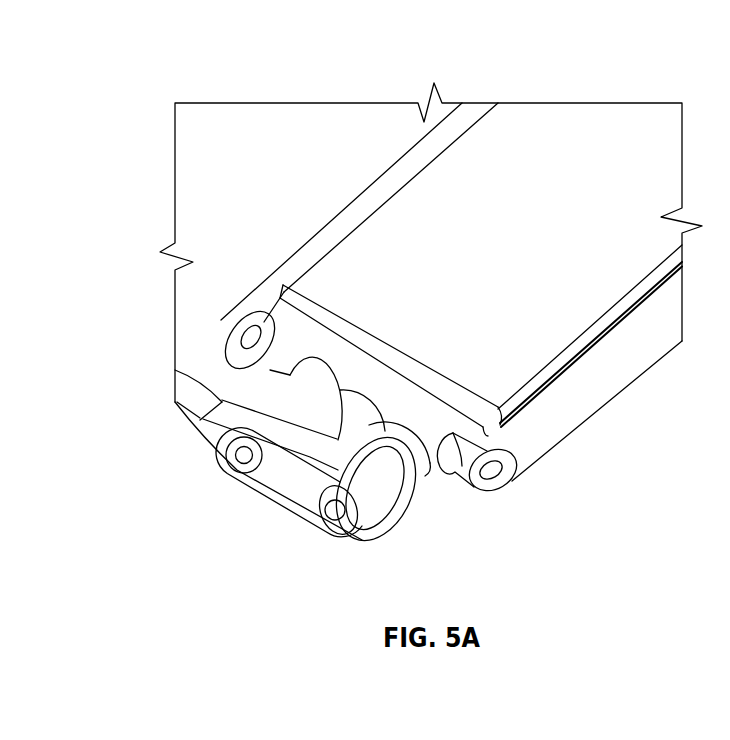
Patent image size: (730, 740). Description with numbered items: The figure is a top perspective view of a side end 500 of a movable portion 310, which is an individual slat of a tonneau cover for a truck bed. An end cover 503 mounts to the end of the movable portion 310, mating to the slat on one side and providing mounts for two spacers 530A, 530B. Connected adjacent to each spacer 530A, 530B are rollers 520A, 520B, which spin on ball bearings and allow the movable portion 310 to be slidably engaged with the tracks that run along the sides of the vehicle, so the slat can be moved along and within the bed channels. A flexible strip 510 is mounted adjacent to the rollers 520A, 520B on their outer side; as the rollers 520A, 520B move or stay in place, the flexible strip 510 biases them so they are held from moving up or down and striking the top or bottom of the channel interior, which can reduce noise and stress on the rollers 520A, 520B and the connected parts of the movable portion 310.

The side end 500 is at (208, 296).
The movable portion 310 is at (528, 137).
The end cover 503 is at (347, 328).
The flexible strip 510 is at (275, 488).
The roller 520A is at (408, 503).
The roller 520B is at (270, 380).
The spacer 530A is at (413, 472).
The spacer 530B is at (305, 378).